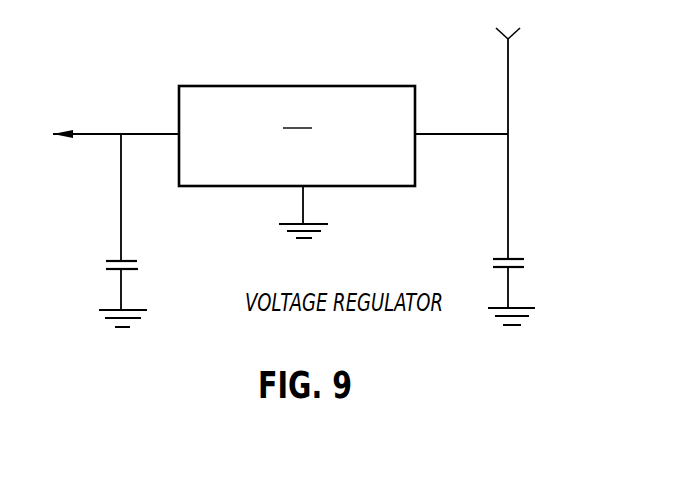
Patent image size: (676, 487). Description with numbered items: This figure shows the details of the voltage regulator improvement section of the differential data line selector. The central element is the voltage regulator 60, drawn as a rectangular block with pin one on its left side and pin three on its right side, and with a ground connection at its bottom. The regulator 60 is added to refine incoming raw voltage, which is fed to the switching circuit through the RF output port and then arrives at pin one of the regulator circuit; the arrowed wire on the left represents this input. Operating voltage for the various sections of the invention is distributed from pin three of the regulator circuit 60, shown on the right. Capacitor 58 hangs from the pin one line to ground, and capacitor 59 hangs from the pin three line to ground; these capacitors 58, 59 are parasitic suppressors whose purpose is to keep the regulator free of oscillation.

The voltage regulator 60 is at (266, 90).
The capacitor 58 is at (127, 271).
The capacitor 59 is at (518, 268).